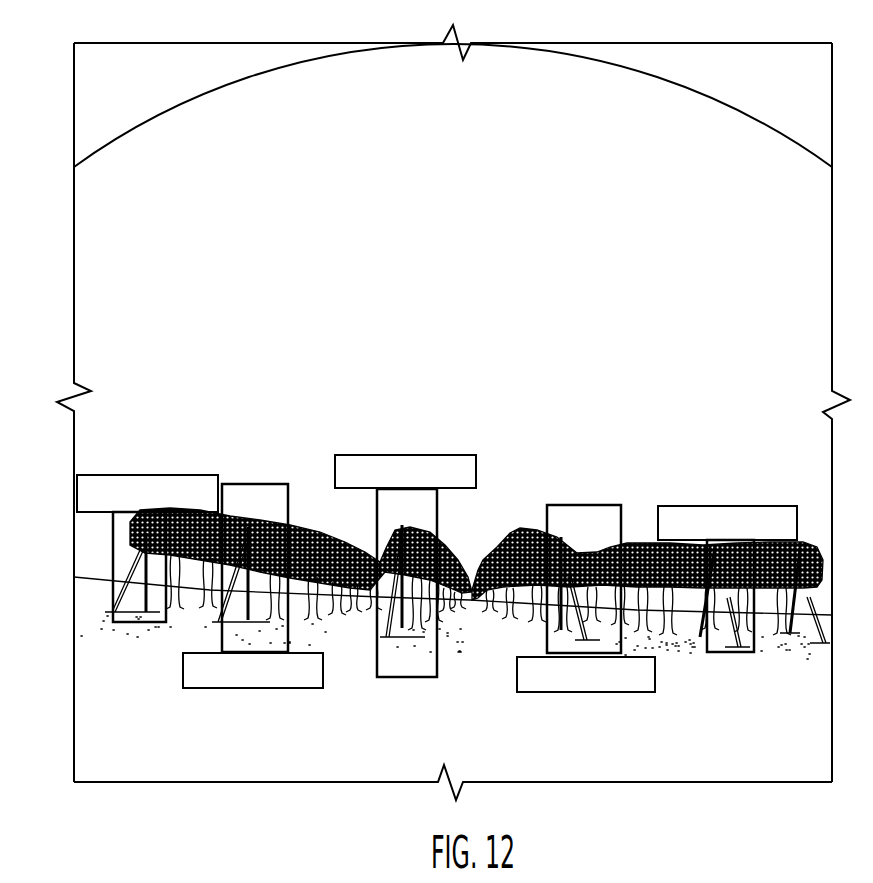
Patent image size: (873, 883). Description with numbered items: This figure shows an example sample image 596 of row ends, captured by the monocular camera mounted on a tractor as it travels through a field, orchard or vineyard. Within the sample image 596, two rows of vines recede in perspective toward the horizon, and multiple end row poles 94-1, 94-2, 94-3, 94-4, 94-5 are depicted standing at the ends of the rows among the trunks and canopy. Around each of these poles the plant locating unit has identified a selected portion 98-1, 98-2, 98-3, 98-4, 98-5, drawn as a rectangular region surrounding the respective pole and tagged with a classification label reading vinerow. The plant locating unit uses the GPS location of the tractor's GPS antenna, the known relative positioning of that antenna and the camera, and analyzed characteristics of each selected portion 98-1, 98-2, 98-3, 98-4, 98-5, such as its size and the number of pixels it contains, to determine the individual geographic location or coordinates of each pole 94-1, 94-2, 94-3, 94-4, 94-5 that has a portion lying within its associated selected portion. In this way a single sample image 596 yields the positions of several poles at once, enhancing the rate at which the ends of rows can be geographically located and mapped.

The sample image 596 is at (74, 88).
The end row pole 94-1 is at (142, 542).
The end row pole 94-2 is at (249, 527).
The end row pole 94-3 is at (402, 525).
The end row pole 94-4 is at (563, 538).
The end row pole 94-5 is at (707, 626).
The selected portion 98-1 is at (110, 589).
The selected portion 98-2 is at (217, 635).
The selected portion 98-3 is at (407, 677).
The selected portion 98-4 is at (547, 640).
The selected portion 98-5 is at (745, 653).